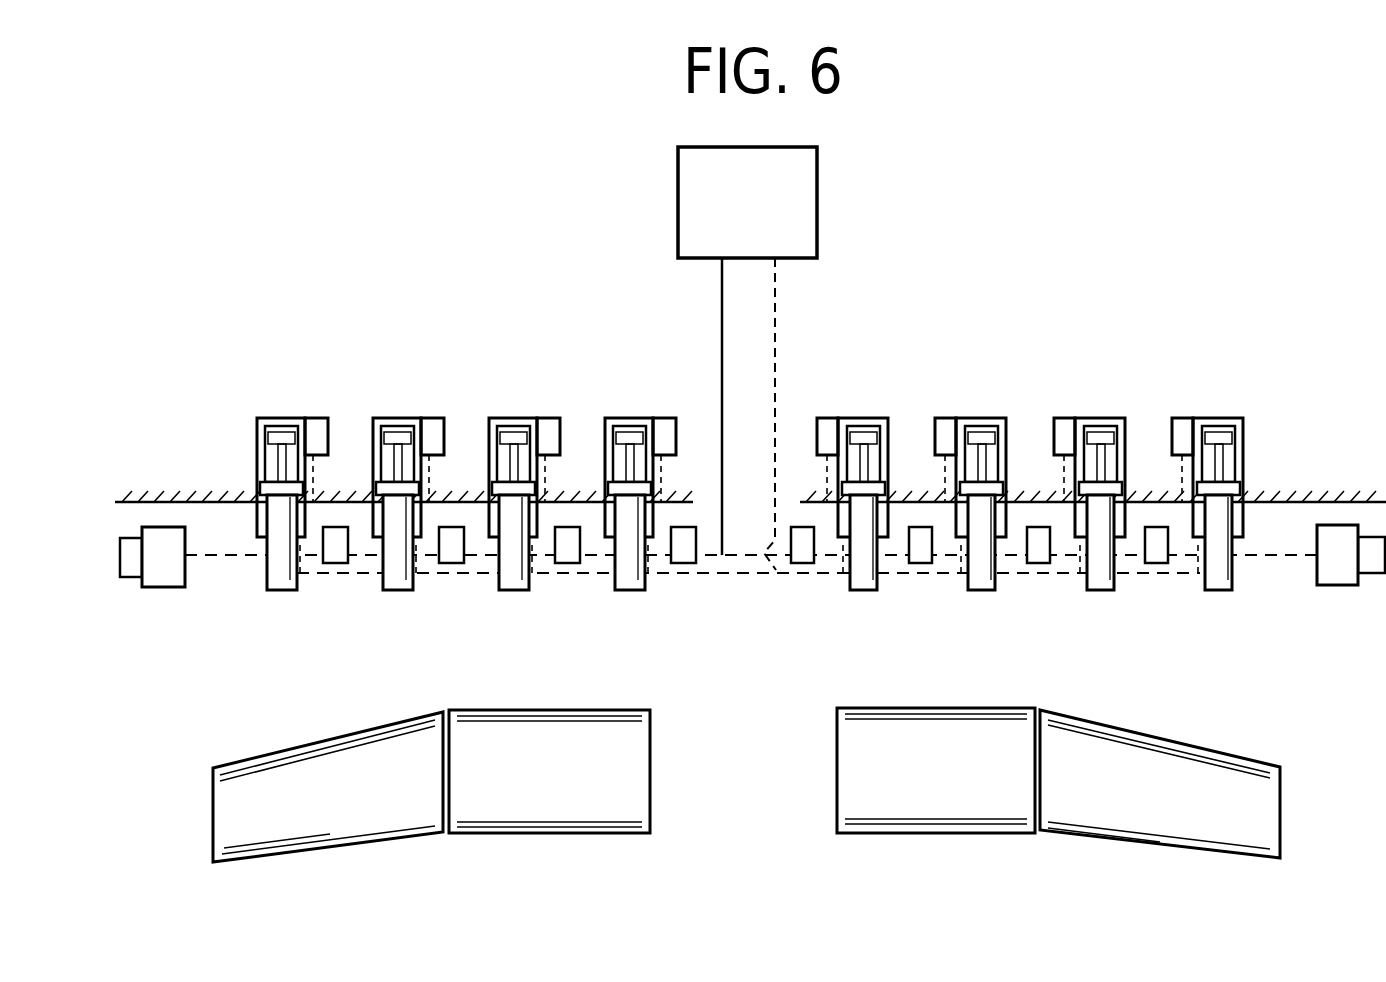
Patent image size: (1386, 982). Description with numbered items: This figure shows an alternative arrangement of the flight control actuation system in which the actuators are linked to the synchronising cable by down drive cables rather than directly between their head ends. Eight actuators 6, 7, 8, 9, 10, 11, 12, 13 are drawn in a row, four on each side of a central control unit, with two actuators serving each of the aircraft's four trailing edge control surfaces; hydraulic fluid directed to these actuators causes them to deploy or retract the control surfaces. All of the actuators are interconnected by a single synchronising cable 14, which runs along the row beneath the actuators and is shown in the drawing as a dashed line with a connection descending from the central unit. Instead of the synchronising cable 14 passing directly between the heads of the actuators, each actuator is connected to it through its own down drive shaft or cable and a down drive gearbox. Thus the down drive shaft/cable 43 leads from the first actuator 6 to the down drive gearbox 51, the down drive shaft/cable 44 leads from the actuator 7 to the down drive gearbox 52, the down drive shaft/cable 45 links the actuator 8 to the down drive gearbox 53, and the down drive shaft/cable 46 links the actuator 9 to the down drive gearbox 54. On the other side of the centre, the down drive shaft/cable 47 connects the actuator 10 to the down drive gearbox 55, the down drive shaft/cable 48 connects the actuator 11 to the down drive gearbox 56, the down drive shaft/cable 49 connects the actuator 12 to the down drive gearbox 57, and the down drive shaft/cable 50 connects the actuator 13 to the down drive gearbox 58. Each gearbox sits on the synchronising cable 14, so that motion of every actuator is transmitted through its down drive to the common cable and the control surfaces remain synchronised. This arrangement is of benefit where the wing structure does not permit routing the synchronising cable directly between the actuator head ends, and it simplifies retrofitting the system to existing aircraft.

The actuator 6 is at (275, 517).
The actuator 7 is at (390, 517).
The actuator 8 is at (507, 517).
The actuator 9 is at (623, 517).
The actuator 10 is at (866, 519).
The actuator 11 is at (984, 519).
The actuator 12 is at (1103, 519).
The actuator 13 is at (1222, 519).
The synchronising cable 14 is at (749, 556).
The down drive shaft/cable 43 is at (318, 520).
The down drive shaft/cable 44 is at (433, 520).
The down drive shaft/cable 45 is at (549, 520).
The down drive shaft/cable 46 is at (665, 520).
The down drive shaft/cable 47 is at (823, 517).
The down drive shaft/cable 48 is at (942, 517).
The down drive shaft/cable 49 is at (1061, 517).
The down drive shaft/cable 50 is at (1177, 517).
The down drive gearbox 51 is at (337, 547).
The down drive gearbox 52 is at (453, 547).
The down drive gearbox 53 is at (571, 547).
The down drive gearbox 54 is at (689, 547).
The down drive gearbox 55 is at (803, 547).
The down drive gearbox 56 is at (920, 547).
The down drive gearbox 57 is at (1038, 547).
The down drive gearbox 58 is at (1155, 547).